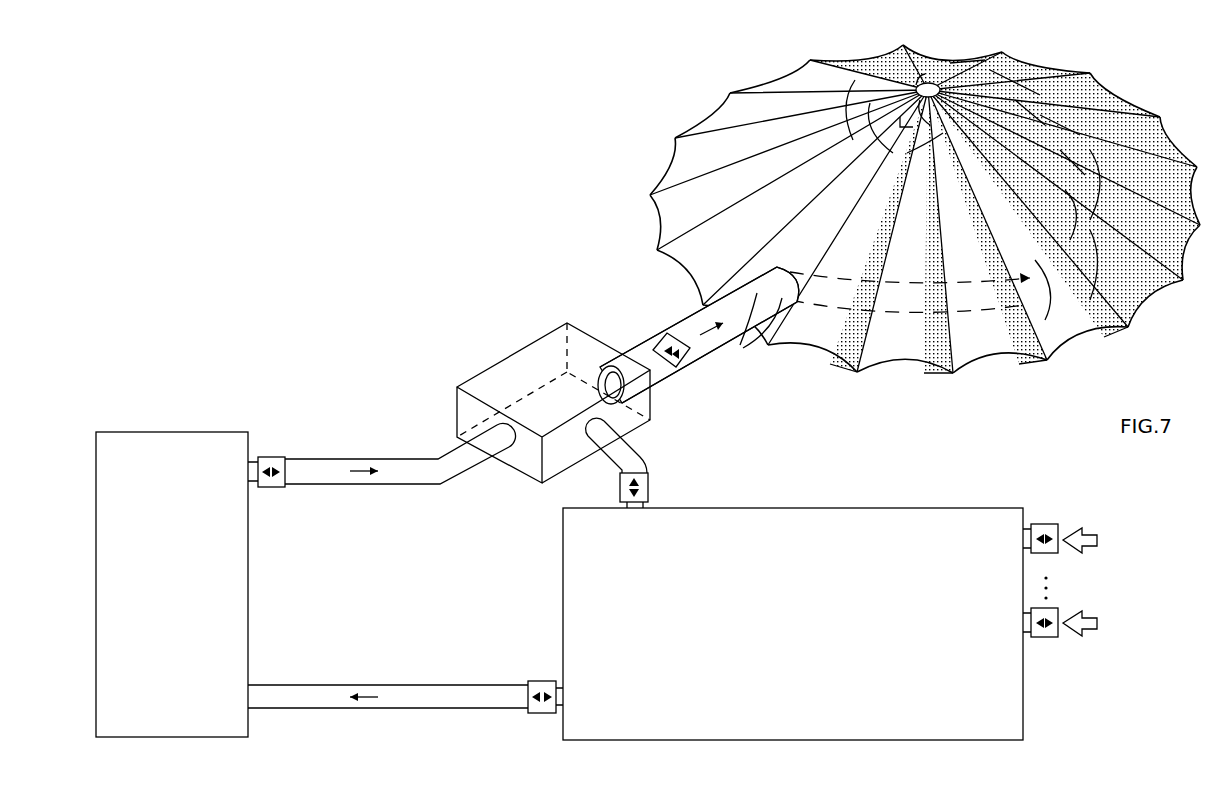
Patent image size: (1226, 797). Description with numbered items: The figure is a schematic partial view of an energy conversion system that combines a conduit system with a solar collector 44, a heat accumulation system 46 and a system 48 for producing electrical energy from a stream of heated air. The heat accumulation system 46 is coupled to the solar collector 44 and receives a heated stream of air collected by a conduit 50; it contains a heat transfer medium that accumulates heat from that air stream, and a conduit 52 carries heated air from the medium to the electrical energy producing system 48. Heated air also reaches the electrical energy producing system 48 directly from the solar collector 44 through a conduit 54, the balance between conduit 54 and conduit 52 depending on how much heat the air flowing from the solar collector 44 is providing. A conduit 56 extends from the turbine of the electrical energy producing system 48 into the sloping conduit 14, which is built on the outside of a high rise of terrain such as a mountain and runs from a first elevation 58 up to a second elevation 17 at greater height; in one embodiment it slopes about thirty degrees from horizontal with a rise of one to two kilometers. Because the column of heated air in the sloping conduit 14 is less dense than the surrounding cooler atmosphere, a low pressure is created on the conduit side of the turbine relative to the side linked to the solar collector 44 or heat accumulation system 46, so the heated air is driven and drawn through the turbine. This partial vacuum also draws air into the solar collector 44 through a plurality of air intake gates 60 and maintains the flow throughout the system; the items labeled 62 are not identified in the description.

The sloping conduit 14 is at (932, 297).
The second elevation 17 is at (940, 84).
The solar collector 44 is at (940, 516).
The heat accumulation system 46 is at (210, 445).
The system for producing electrical energy 48 is at (520, 360).
The conduit 50 is at (362, 684).
The conduit 52 is at (347, 458).
The conduit 54 is at (637, 444).
The conduit 56 is at (657, 343).
The first elevation 58 is at (770, 303).
The air intake gates 60 is at (919, 84).
The inlet valves 62 is at (1046, 555).